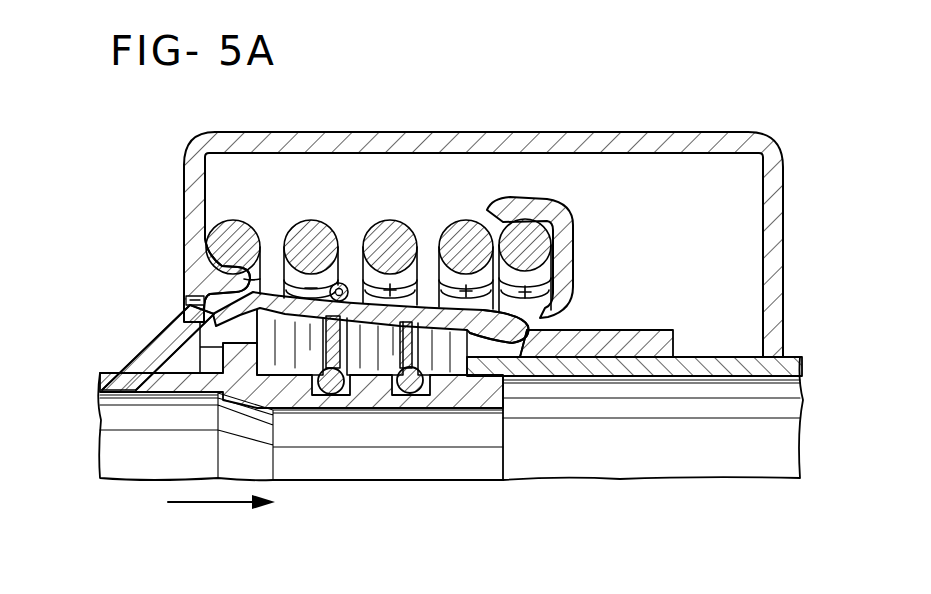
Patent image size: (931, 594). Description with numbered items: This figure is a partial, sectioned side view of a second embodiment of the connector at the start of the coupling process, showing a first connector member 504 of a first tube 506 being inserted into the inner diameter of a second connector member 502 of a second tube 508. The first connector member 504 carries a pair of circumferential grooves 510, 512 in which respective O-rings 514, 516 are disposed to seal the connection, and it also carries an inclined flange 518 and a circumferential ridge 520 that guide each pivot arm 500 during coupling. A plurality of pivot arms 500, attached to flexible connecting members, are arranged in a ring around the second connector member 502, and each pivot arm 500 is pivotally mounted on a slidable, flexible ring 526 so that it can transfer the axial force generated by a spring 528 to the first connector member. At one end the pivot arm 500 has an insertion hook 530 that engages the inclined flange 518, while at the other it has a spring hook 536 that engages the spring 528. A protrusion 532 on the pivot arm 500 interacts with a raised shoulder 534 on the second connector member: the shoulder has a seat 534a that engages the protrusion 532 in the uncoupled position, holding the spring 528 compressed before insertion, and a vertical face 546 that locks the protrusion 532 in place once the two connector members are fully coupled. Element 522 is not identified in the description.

The pivot arm 500 is at (592, 270).
The second connector member 502 is at (650, 118).
The first connector member 504 is at (122, 348).
The first tube 506 is at (100, 443).
The second tube 508 is at (783, 437).
The circumferential groove 510 is at (343, 405).
The circumferential groove 512 is at (427, 410).
The O-ring 514 is at (318, 410).
The O-ring 516 is at (393, 410).
The inclined flange 518 is at (165, 328).
The circumferential ridge 520 is at (237, 367).
The center block 522 is at (366, 410).
The slidable, flexible ring 526 is at (340, 284).
The spring 528 is at (400, 217).
The insertion hook 530 is at (187, 313).
The protrusion 532 is at (527, 337).
The raised shoulder 534 is at (665, 314).
The seat 534a is at (527, 345).
The spring hook 536 is at (578, 263).
The vertical face 546 is at (720, 334).